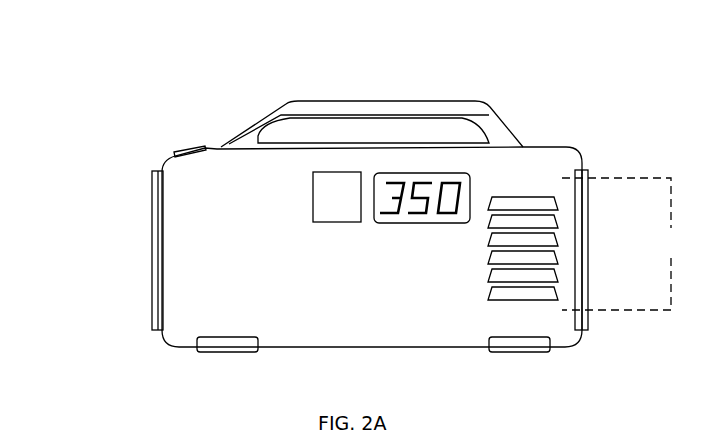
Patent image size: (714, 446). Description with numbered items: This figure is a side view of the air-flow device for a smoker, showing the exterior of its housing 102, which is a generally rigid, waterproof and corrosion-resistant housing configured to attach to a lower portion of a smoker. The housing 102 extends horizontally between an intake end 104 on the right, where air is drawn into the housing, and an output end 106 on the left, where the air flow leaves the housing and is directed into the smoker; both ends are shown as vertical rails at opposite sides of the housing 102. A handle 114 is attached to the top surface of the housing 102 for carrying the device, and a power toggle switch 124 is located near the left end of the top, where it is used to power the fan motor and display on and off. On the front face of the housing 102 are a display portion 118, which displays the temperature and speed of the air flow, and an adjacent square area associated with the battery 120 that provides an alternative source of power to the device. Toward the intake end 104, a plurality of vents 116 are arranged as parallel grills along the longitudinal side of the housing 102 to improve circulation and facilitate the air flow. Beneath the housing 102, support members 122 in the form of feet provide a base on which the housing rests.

The housing 102 is at (372, 247).
The intake end 104 is at (590, 173).
The output end 106 is at (150, 207).
The handle 114 is at (318, 104).
The vents 116 is at (588, 244).
The display portion 118 is at (445, 180).
The battery 120 is at (347, 185).
The support member 122 is at (220, 352).
The power toggle switch 124 is at (193, 146).